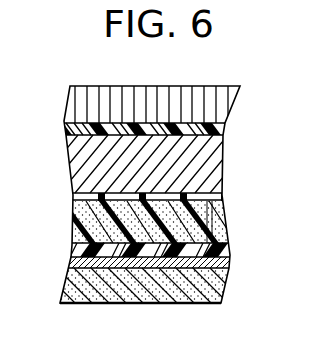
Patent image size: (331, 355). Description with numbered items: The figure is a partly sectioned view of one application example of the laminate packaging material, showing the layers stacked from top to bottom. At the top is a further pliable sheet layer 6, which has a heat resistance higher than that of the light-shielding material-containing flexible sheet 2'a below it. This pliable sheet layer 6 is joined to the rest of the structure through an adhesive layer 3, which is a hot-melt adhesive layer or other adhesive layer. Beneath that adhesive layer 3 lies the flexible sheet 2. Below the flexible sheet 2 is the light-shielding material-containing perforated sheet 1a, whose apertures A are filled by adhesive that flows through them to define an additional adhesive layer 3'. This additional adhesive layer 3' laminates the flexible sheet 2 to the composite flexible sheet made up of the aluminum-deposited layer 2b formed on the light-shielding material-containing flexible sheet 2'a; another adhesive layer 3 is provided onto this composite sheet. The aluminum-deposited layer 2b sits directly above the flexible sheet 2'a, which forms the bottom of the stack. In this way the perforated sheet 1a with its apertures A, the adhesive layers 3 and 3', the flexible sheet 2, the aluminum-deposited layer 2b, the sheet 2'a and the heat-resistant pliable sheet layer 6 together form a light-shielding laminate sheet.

The pliable sheet layer 6 is at (228, 101).
The adhesive layer 3 is at (124, 187).
The flexible sheet 2 is at (155, 164).
The additional adhesive layer 3' is at (121, 186).
The apertures A is at (73, 217).
The light-shielding material-containing perforated sheet 1a is at (228, 228).
The cell gap B is at (228, 207).
The aluminum-deposited layer 2b is at (70, 262).
The light-shielding material-containing flexible sheet 2'a is at (126, 297).